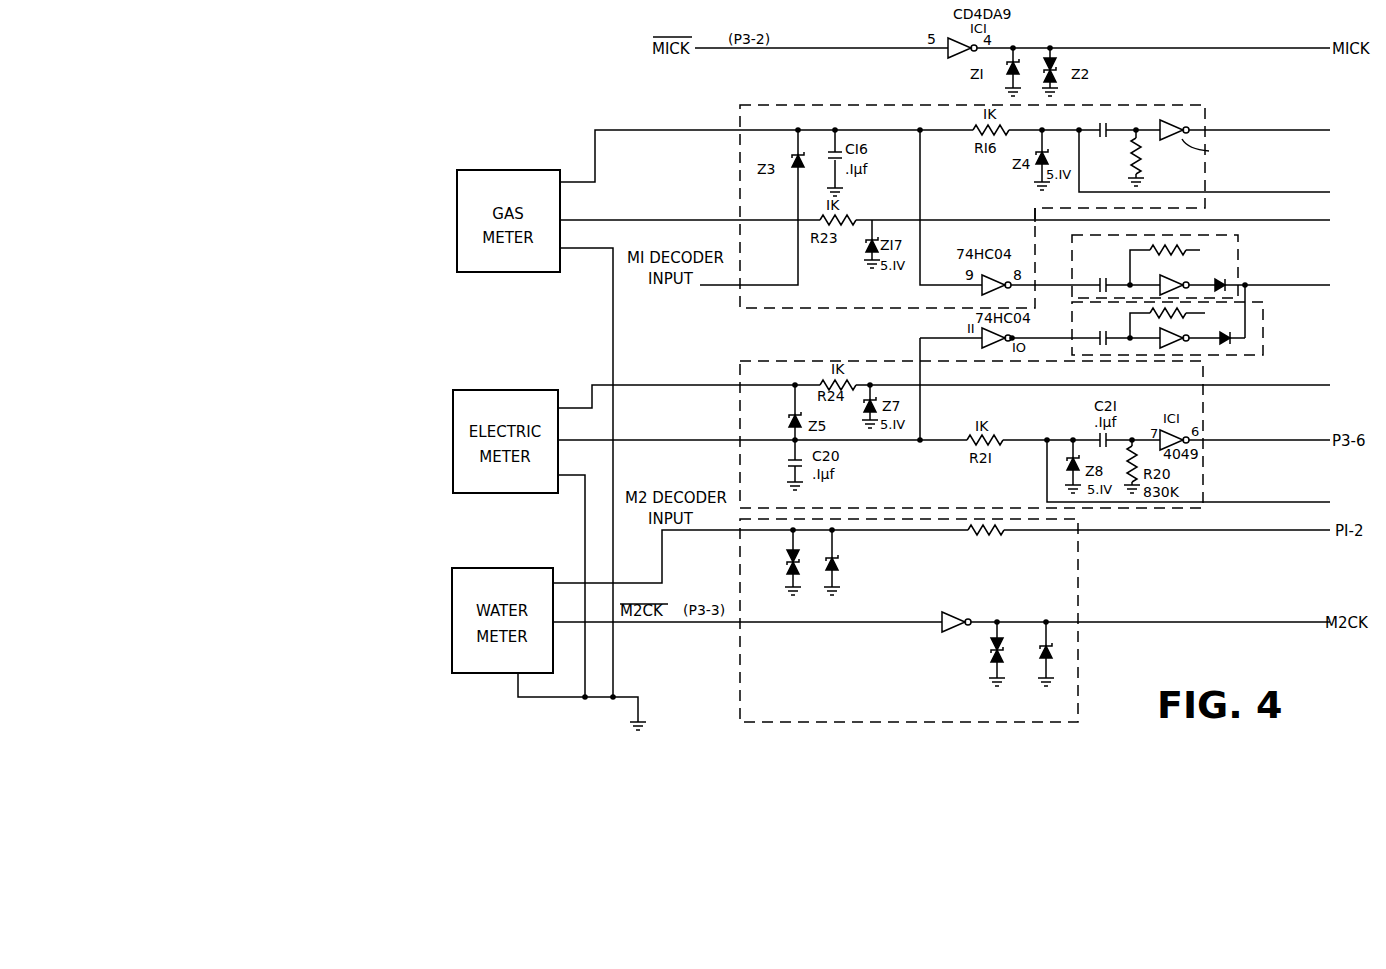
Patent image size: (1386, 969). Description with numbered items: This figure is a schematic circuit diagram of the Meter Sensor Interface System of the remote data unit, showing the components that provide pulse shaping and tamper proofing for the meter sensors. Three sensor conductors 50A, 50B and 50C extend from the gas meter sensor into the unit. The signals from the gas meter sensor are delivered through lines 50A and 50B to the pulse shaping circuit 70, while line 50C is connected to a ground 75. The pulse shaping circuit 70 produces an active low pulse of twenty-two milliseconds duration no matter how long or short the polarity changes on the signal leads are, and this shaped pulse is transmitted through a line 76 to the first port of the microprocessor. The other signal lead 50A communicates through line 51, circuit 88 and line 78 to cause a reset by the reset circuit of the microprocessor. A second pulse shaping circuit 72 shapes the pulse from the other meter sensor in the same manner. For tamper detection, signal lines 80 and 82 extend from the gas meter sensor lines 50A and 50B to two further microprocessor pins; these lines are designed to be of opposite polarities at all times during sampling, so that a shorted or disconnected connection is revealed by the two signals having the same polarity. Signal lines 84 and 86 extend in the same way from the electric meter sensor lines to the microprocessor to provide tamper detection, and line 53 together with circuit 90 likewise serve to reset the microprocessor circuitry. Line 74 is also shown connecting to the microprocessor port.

The sensor conductor 50A is at (601, 128).
The sensor conductor 50B is at (630, 223).
The sensor conductor 50C is at (612, 262).
The line 51 is at (920, 213).
The line 53 is at (920, 338).
The pulse shaping circuit 70 is at (1147, 111).
The pulse shaping circuit 72 is at (1080, 601).
The signal line 74 is at (1265, 385).
The ground 75 is at (631, 731).
The line 76 is at (1246, 130).
The line 78 is at (1268, 285).
The signal line 80 is at (1252, 193).
The signal line 82 is at (1222, 221).
The signal line 84 is at (718, 385).
The signal line 86 is at (716, 440).
The circuit 88 is at (1239, 263).
The circuit 90 is at (1263, 327).